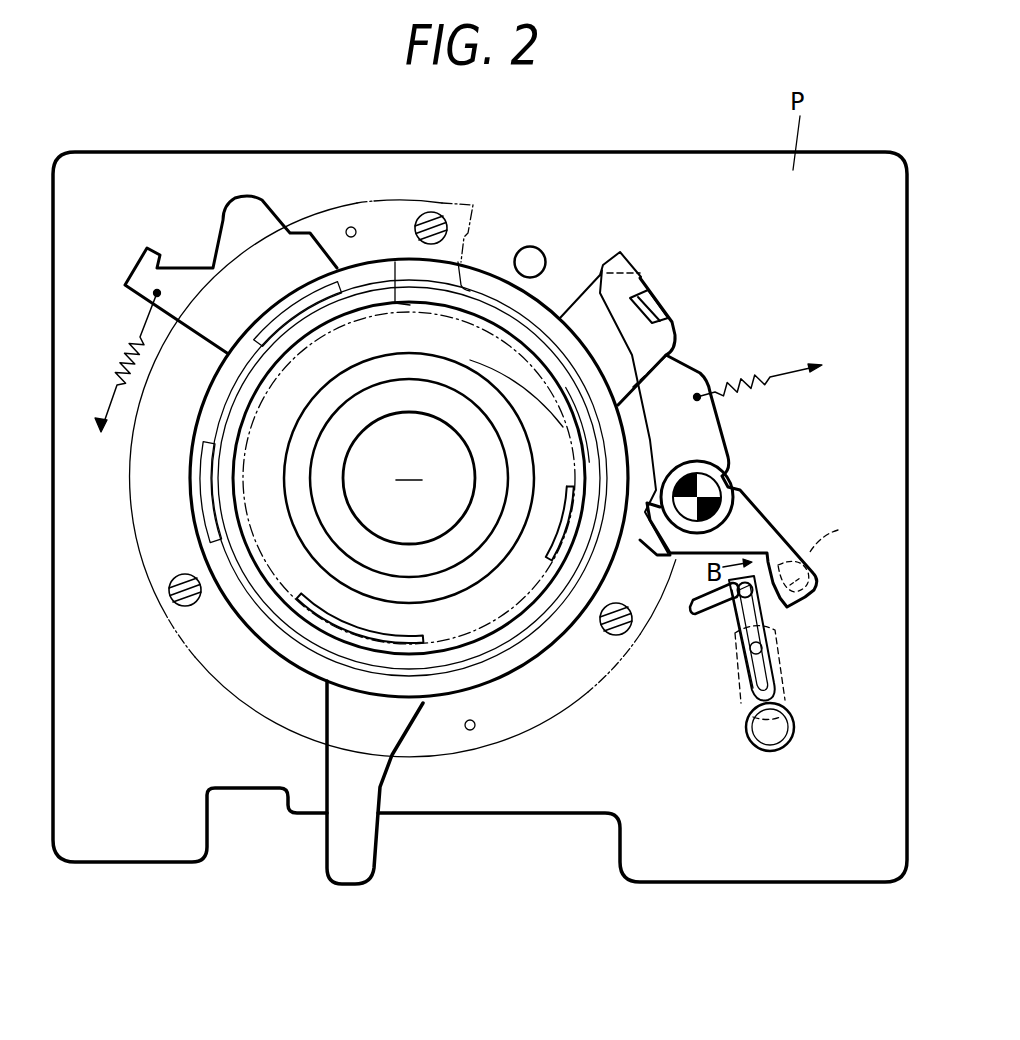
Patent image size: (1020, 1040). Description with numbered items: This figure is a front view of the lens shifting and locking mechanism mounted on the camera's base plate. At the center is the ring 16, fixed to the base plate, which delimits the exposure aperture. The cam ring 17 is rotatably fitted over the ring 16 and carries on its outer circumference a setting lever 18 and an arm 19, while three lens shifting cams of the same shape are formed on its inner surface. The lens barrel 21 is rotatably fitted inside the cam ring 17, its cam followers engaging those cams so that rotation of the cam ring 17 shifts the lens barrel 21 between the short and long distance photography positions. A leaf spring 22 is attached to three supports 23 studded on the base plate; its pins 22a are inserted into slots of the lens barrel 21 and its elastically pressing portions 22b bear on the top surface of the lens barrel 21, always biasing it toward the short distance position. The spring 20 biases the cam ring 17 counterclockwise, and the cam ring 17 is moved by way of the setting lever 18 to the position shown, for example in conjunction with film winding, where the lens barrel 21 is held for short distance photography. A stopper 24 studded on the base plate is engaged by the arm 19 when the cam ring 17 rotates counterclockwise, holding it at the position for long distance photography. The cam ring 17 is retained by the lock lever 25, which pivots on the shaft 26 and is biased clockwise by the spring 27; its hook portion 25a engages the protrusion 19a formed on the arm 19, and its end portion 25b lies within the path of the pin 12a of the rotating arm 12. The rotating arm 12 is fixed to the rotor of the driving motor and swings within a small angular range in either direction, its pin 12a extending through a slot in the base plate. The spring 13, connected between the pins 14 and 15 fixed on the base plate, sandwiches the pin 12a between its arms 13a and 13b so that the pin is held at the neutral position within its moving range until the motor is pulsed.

The rotating arm 12 is at (740, 707).
The pin 12a is at (712, 613).
The spring 13 is at (797, 718).
The arm 13a is at (780, 680).
The arm 13b is at (745, 673).
The pin 14 is at (763, 733).
The pin 15 is at (772, 645).
The ring 16 is at (330, 520).
The cam ring 17 is at (243, 627).
The setting lever 18 is at (325, 850).
The arm 19 is at (583, 292).
The protrusion 19a is at (663, 303).
The spring 20 is at (116, 389).
The lens barrel 21 is at (220, 456).
The leaf spring 22 is at (280, 710).
The pins 22a is at (348, 227).
The elastically pressing portions 22b is at (292, 353).
The supports 23 is at (440, 212).
The stopper 24 is at (528, 247).
The lock lever 25 is at (725, 443).
The hook portion 25a is at (632, 283).
The end portion 25b is at (800, 603).
The shaft 26 is at (732, 478).
The spring 27 is at (786, 372).